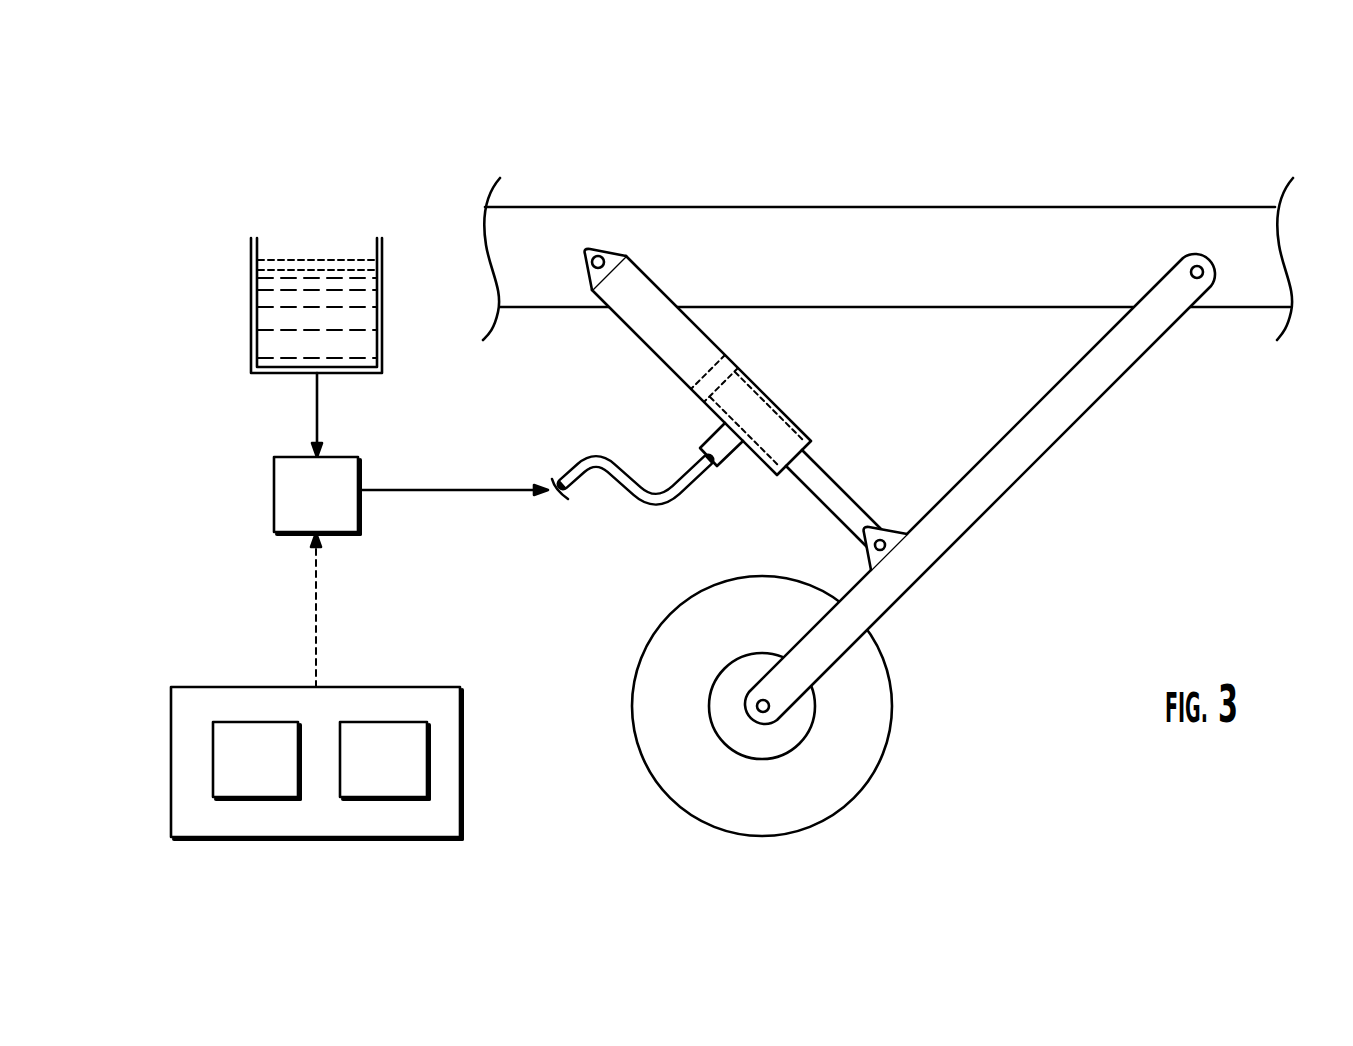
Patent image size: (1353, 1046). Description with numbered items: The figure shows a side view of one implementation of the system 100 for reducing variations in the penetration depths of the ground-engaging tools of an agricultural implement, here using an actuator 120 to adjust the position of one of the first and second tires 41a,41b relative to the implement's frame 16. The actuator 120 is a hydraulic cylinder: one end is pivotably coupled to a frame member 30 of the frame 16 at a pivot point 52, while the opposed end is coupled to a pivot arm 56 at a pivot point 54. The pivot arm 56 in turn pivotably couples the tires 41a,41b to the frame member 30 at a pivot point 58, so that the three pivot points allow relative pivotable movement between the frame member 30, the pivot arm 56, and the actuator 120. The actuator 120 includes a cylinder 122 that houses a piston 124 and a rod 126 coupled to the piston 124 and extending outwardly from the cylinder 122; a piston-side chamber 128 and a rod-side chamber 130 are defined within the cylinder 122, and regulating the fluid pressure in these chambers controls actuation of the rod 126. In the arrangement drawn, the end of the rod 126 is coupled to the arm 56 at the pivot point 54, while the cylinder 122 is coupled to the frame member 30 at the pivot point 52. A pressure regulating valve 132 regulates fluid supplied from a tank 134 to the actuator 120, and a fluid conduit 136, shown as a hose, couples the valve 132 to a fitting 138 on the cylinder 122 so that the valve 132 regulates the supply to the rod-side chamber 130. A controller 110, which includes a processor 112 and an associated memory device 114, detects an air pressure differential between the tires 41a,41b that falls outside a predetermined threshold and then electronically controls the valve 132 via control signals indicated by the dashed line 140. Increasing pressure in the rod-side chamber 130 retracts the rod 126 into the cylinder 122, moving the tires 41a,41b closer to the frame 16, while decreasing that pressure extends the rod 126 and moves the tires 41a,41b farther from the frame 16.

The system 100 is at (334, 150).
The frame 16 is at (892, 147).
The frame member 30 is at (985, 232).
The pivot point 52 is at (601, 255).
The pivot point 54 is at (884, 538).
The pivot arm 56 is at (1052, 445).
The pivot point 58 is at (1198, 266).
The first and second tires 41a,41b is at (893, 722).
The actuator 120 is at (739, 362).
The cylinder 122 is at (613, 311).
The piston 124 is at (700, 392).
The rod 126 is at (838, 484).
The piston-side chamber 128 is at (663, 342).
The rod-side chamber 130 is at (777, 413).
The pressure regulating valve 132 is at (274, 502).
The tank 134 is at (252, 318).
The fluid conduit 136 is at (640, 508).
The fitting 138 is at (715, 460).
The control signals 140 is at (316, 636).
The controller 110 is at (316, 730).
The processor 112 is at (278, 772).
The memory device 114 is at (403, 772).